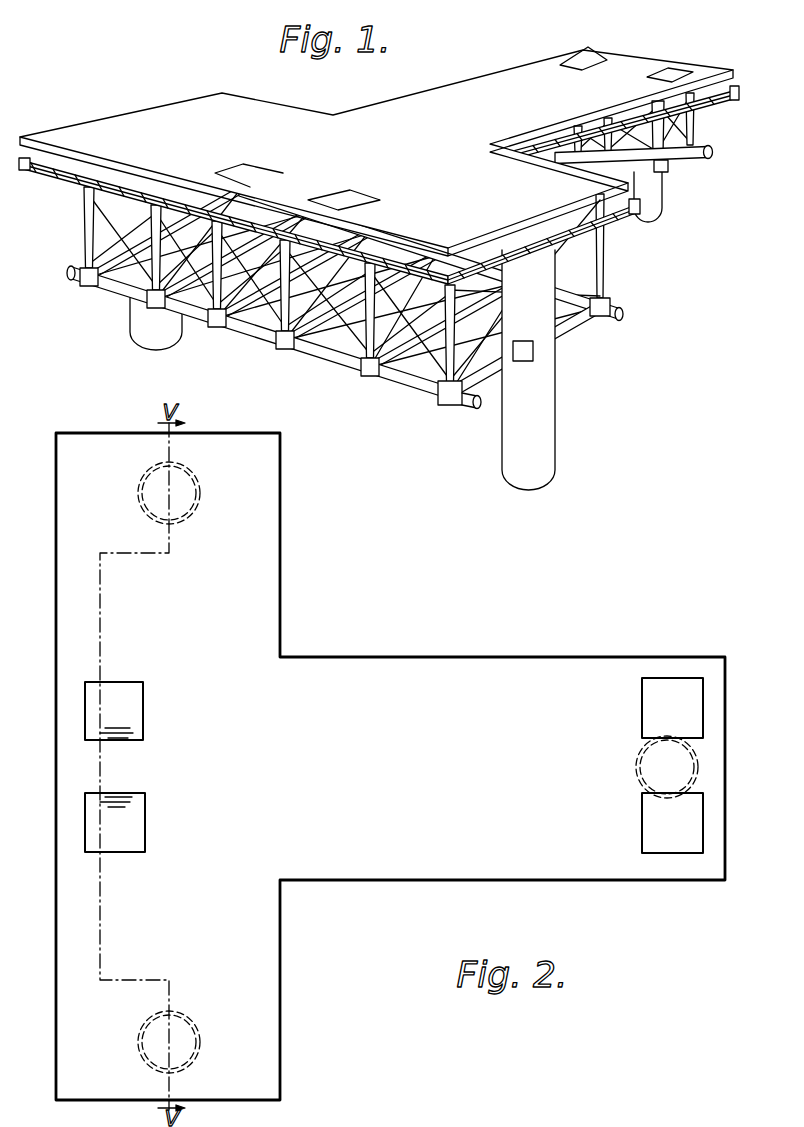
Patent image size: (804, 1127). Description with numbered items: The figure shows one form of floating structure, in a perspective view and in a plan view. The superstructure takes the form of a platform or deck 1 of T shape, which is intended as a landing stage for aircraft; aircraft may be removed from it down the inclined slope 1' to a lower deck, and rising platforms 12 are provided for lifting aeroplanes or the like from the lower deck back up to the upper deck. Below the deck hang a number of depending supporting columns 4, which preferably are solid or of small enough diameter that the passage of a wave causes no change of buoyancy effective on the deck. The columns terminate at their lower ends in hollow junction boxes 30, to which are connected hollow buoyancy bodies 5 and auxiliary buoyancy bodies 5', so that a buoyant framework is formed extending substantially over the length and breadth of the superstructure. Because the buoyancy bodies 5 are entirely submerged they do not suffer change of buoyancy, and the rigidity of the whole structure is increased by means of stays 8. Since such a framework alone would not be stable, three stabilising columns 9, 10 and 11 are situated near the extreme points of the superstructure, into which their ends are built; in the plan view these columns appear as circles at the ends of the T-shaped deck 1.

In FIG. 1, the platform or deck 1 is at (376, 153).
In FIG. 2, the platform or deck 1 is at (390, 766).
In FIG. 1, the inclined slope 1' is at (297, 175).
In FIG. 2, the inclined slope 1' is at (145, 767).
In FIG. 1, the rising platform 12 is at (673, 72).
In FIG. 2, the rising platform 12 is at (650, 800).
In FIG. 1, the stays 8 is at (392, 262).
In FIG. 1, the depending supporting columns 4 is at (228, 325).
In FIG. 1, the hollow buoyancy bodies 5 is at (390, 282).
In FIG. 1, the auxiliary buoyancy bodies 5' is at (525, 354).
In FIG. 1, the hollow junction boxes 30 is at (440, 397).
In FIG. 1, the stabilising column 9 is at (142, 322).
In FIG. 1, the stabilising column 10 is at (525, 453).
In FIG. 1, the stabilising column 11 is at (653, 190).